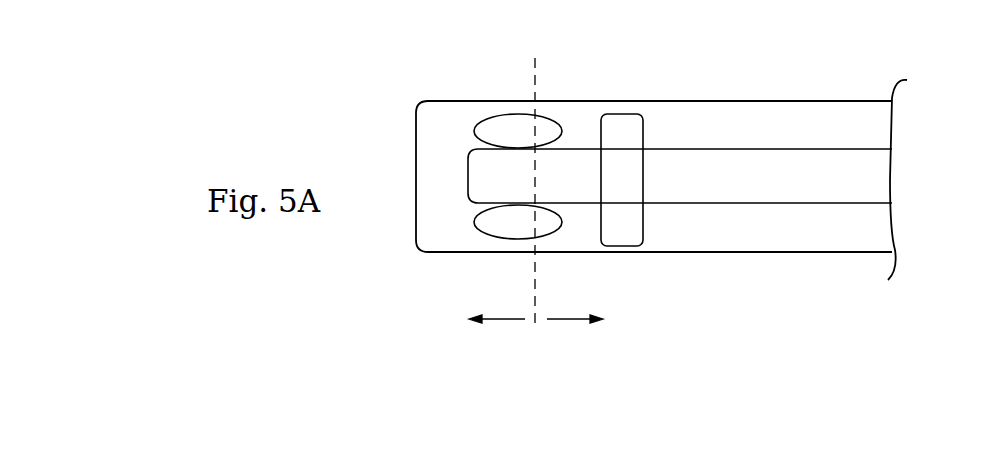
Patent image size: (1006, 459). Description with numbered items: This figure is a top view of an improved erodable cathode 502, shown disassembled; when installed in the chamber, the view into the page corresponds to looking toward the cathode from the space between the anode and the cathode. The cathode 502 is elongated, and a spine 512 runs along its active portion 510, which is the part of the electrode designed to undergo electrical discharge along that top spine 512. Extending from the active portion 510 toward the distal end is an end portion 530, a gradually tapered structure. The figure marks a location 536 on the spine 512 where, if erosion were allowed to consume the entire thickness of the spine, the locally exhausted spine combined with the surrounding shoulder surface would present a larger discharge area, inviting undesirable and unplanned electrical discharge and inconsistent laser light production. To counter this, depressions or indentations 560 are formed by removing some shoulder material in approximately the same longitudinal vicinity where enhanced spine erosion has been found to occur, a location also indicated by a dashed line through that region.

The cathode 502 is at (774, 52).
The spine 512 is at (680, 176).
The location 536 is at (632, 113).
The depressions or indentations 560 is at (493, 128).
The active portion 510 is at (591, 320).
The end portion 530 is at (497, 332).